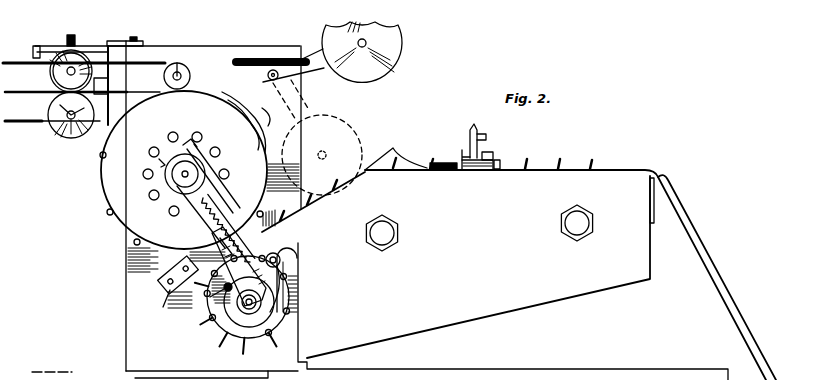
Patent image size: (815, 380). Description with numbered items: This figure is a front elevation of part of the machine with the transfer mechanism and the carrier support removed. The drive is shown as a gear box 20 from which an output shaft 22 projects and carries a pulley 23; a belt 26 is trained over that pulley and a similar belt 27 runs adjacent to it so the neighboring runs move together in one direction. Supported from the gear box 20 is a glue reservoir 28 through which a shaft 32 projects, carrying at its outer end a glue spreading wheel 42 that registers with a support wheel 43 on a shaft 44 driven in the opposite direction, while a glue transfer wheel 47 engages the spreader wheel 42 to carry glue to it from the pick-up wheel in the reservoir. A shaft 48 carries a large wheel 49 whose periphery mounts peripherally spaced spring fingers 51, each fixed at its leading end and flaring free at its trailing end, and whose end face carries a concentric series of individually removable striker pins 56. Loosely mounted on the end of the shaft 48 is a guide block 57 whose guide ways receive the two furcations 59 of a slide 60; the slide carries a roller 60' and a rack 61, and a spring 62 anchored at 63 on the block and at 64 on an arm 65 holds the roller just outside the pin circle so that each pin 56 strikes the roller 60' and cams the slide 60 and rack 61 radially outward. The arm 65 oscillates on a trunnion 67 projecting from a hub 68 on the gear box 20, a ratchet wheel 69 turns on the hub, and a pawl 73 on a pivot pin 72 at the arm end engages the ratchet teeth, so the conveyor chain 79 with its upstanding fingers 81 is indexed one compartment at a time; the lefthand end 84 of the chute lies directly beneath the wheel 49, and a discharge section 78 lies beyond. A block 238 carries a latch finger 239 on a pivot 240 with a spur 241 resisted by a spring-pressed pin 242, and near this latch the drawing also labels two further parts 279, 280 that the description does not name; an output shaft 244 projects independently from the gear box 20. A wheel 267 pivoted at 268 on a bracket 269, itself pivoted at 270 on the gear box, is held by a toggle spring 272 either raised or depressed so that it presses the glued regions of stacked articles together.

The gear box 20 is at (254, 57).
The output shaft 22 is at (181, 74).
The pulley 23 is at (191, 77).
The belt 26 is at (143, 96).
The belt 27 is at (118, 96).
The glue reservoir 28 is at (45, 75).
The shaft 32 is at (66, 85).
The glue spreading wheel 42 is at (86, 80).
The support wheel 43 is at (65, 131).
The shaft 44 is at (75, 131).
The glue transfer wheel 47 is at (35, 47).
The shaft 48 is at (196, 174).
The wheel 49 is at (118, 209).
The spring finger 51 is at (250, 116).
The striker elements or pins 56 is at (196, 132).
The guide block 57 is at (171, 183).
The furcations 59 is at (199, 145).
The slide 60 is at (195, 217).
The roller 60' is at (220, 176).
The rack 61 is at (222, 242).
The spring 62 is at (230, 206).
The anchor 63 is at (230, 175).
The anchor 64 is at (290, 289).
The arm 65 is at (281, 254).
The trunnion 67 is at (257, 308).
The hub 68 is at (275, 313).
The ratchet wheel 69 is at (291, 305).
The pivot pin 72 is at (253, 261).
The pawl 73 is at (284, 269).
The discharge section 78 is at (685, 225).
The chain 79 is at (222, 329).
The fingers 81 is at (393, 159).
The lefthand end of the chute 84 is at (172, 292).
The block 238 is at (452, 171).
The latch finger 239 is at (478, 133).
The pivot 240 is at (472, 171).
The spur 241 is at (484, 156).
The spring-pressed pin 242 is at (493, 161).
The output shaft 244 is at (224, 294).
The wheel 267 is at (400, 54).
The pivot 268 is at (362, 47).
The bracket 269 is at (320, 70).
The pivot 270 is at (269, 79).
The spring 272 is at (268, 61).
The post 279 is at (470, 141).
The arm 280 is at (468, 145).